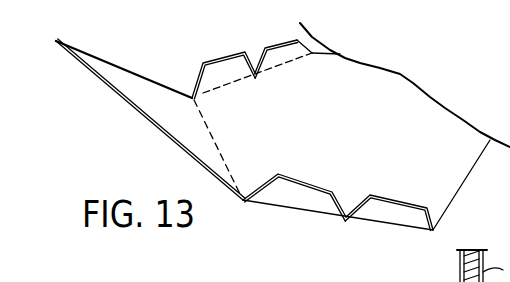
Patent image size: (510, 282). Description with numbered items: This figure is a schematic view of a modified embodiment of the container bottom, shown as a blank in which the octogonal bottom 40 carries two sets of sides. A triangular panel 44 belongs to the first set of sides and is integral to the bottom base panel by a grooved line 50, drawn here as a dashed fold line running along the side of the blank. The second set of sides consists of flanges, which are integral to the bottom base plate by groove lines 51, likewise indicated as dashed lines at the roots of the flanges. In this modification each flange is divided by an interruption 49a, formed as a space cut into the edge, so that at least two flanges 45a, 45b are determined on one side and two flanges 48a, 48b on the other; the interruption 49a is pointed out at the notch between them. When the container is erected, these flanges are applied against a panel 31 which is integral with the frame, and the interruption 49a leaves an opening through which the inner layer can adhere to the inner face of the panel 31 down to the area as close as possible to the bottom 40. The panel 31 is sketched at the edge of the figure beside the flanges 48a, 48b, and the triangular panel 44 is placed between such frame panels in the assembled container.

The octogonal bottom 40 is at (407, 135).
The triangular panel 44 is at (182, 122).
The flange 45a is at (232, 70).
The flange 45b is at (308, 51).
The flange 48a is at (312, 200).
The flange 48b is at (385, 215).
The interruption 49a is at (250, 57).
The grooved line 50 is at (229, 165).
The groove line 51 is at (312, 55).
The panel 31 is at (462, 264).